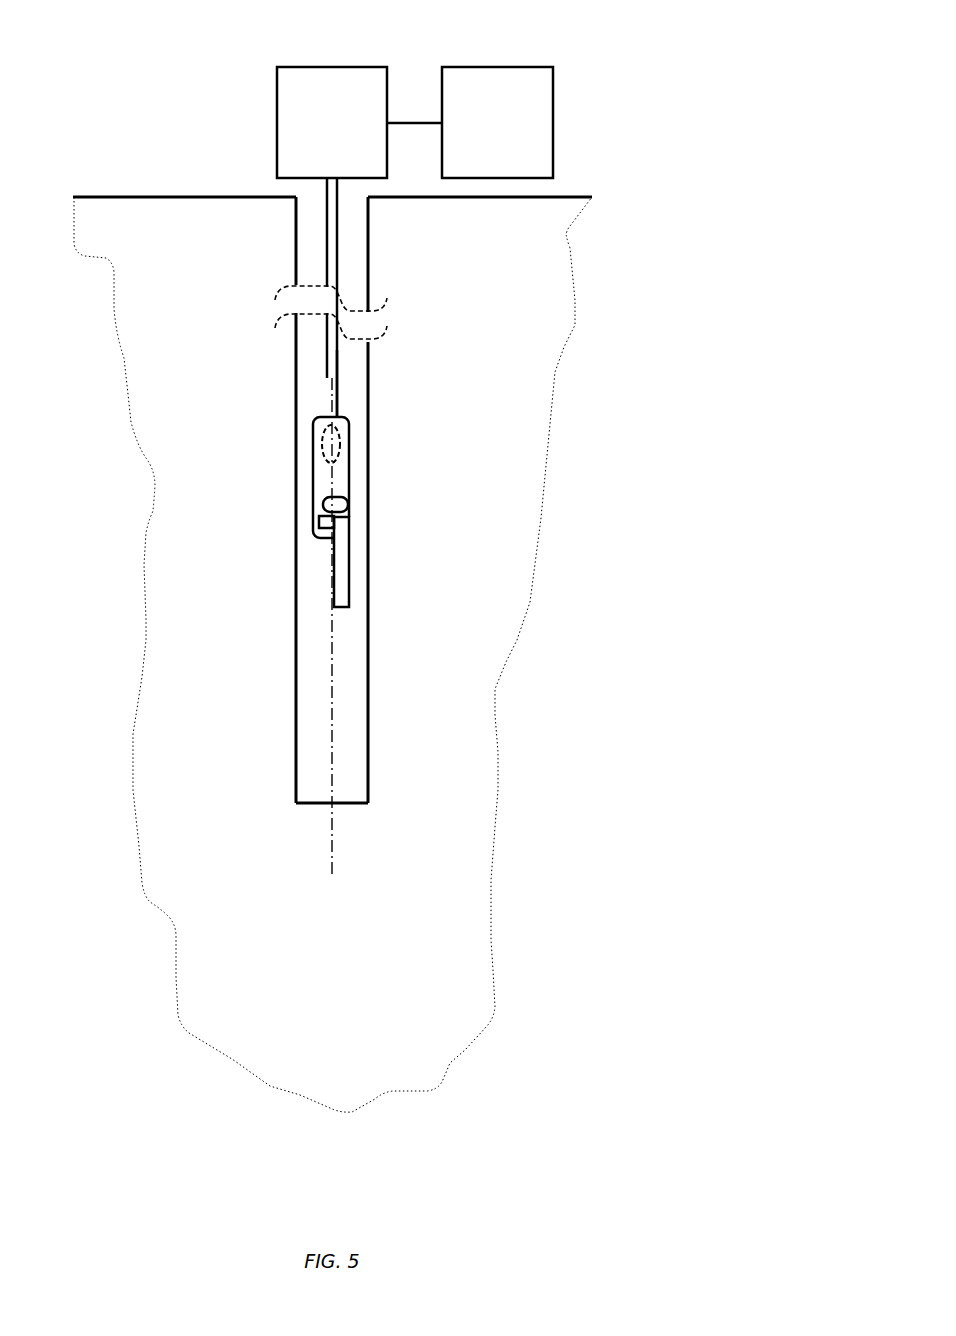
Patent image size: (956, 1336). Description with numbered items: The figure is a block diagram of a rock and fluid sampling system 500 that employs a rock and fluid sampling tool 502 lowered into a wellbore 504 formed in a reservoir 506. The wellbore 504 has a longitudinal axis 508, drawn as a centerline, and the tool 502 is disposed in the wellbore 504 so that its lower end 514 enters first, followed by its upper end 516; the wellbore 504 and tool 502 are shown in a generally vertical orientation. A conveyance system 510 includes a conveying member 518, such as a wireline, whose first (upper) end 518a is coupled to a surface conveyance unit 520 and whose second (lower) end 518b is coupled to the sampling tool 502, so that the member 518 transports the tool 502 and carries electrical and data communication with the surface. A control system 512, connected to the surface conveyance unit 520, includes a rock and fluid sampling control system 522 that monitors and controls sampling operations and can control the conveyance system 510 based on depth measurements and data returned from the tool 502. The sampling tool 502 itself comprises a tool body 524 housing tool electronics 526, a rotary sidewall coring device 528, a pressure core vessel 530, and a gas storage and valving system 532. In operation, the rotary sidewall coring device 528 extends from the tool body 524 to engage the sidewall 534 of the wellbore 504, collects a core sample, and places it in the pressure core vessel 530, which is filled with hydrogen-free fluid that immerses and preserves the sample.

The rock and fluid sampling system 500 is at (574, 15).
The rock and fluid sampling tool 502 is at (435, 459).
The wellbore 504 is at (372, 802).
The reservoir 506 is at (519, 298).
The longitudinal axis 508 is at (371, 626).
The conveyance system 510 is at (286, 122).
The control system 512 is at (546, 122).
The lower end 514 is at (399, 587).
The upper end 516 is at (395, 404).
The conveying member 518 is at (351, 297).
The first end 518a is at (279, 232).
The second end 518b is at (404, 383).
The surface conveyance unit 520 is at (332, 122).
The rock and fluid sampling control system 522 is at (497, 122).
The tool body 524 is at (340, 501).
The tool electronics 526 is at (283, 446).
The rotary sidewall coring device 528 is at (287, 500).
The pressure core vessel 530 is at (393, 562).
The gas storage and valving system 532 is at (280, 529).
The sidewall 534 is at (322, 500).